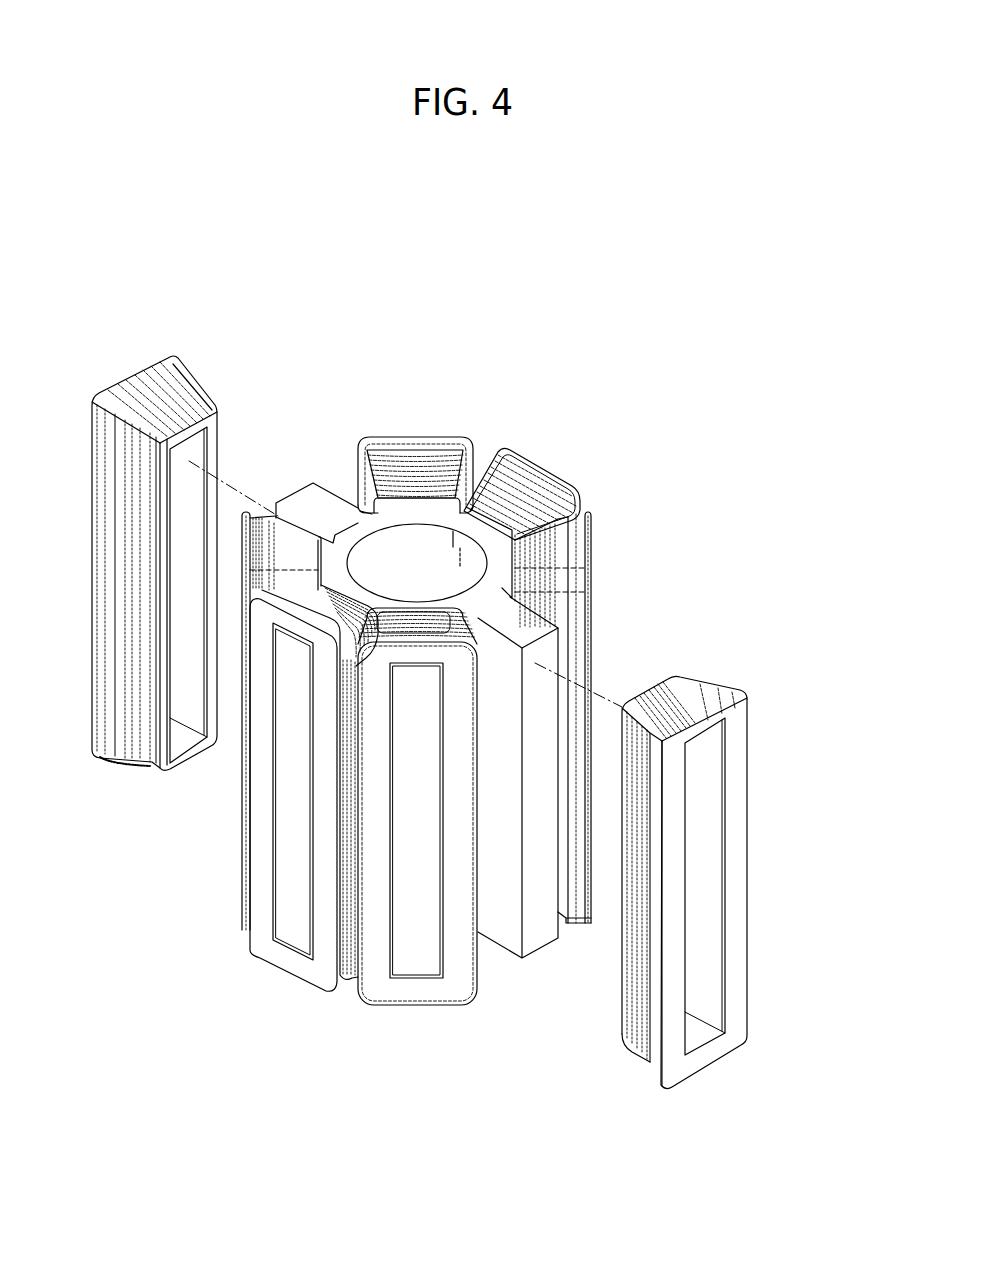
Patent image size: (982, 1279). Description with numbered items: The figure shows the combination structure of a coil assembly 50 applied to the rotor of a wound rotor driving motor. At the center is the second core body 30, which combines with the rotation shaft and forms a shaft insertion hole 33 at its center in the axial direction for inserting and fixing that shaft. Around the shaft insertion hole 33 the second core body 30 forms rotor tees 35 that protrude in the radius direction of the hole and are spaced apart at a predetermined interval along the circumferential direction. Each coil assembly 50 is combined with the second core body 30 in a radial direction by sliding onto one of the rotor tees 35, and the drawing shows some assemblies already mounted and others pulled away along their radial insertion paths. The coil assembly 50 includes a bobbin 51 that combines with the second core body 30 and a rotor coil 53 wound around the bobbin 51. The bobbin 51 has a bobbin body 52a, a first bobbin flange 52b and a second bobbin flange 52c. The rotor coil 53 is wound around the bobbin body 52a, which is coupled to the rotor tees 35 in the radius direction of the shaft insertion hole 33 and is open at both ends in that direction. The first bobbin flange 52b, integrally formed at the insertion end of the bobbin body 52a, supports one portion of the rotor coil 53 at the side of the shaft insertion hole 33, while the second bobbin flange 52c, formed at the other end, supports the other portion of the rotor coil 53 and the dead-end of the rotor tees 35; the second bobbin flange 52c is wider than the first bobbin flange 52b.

The second core body 30 is at (319, 472).
The shaft insertion hole 33 is at (405, 569).
The rotor tees 35 is at (307, 504).
The coil assembly 50 is at (549, 465).
The bobbin 51 is at (822, 928).
The bobbin body 52a is at (708, 801).
The first bobbin flange 52b is at (620, 840).
The second bobbin flange 52c is at (738, 919).
The rotor coil 53 is at (690, 692).